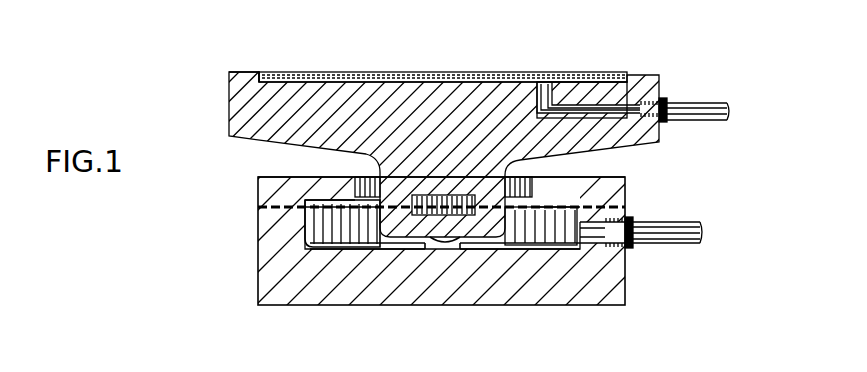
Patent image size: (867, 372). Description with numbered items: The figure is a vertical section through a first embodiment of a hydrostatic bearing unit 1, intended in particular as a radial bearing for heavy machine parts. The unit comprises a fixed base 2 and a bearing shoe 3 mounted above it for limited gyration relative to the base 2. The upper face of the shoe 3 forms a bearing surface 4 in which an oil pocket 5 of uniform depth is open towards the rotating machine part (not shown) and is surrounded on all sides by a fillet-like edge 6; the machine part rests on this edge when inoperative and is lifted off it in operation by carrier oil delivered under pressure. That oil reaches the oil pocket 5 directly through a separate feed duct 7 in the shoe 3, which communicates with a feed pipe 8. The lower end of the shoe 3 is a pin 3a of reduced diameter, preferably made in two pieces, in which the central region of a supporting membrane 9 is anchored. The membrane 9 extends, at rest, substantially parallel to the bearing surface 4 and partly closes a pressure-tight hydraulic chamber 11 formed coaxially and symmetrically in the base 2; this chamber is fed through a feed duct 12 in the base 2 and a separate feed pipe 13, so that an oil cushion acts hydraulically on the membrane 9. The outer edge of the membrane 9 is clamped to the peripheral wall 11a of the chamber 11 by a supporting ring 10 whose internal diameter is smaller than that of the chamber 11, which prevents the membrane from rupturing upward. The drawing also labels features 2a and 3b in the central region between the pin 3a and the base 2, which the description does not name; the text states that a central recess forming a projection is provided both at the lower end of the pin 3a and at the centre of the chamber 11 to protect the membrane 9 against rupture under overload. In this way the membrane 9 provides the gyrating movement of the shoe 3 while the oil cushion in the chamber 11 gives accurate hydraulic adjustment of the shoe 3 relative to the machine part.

The hydrostatic bearing unit 1 is at (252, 318).
The base 2 is at (357, 272).
The lower tube of measuring element 2a is at (435, 250).
The bearing shoe 3 is at (253, 98).
The pin 3a is at (395, 193).
The passage in upper body 3b is at (447, 244).
The bearing surface 4 is at (410, 72).
The oil pocket 5 is at (320, 80).
The fillet-like edge 6 is at (240, 72).
The feed duct 7 is at (592, 105).
The feed pipe 8 is at (683, 108).
The supporting membrane 9 is at (599, 185).
The supporting ring 10 is at (275, 186).
The hydraulic chamber 11 is at (297, 263).
The peripheral wall 11a is at (283, 230).
The feed duct 12 is at (595, 237).
The feed pipe 13 is at (665, 228).